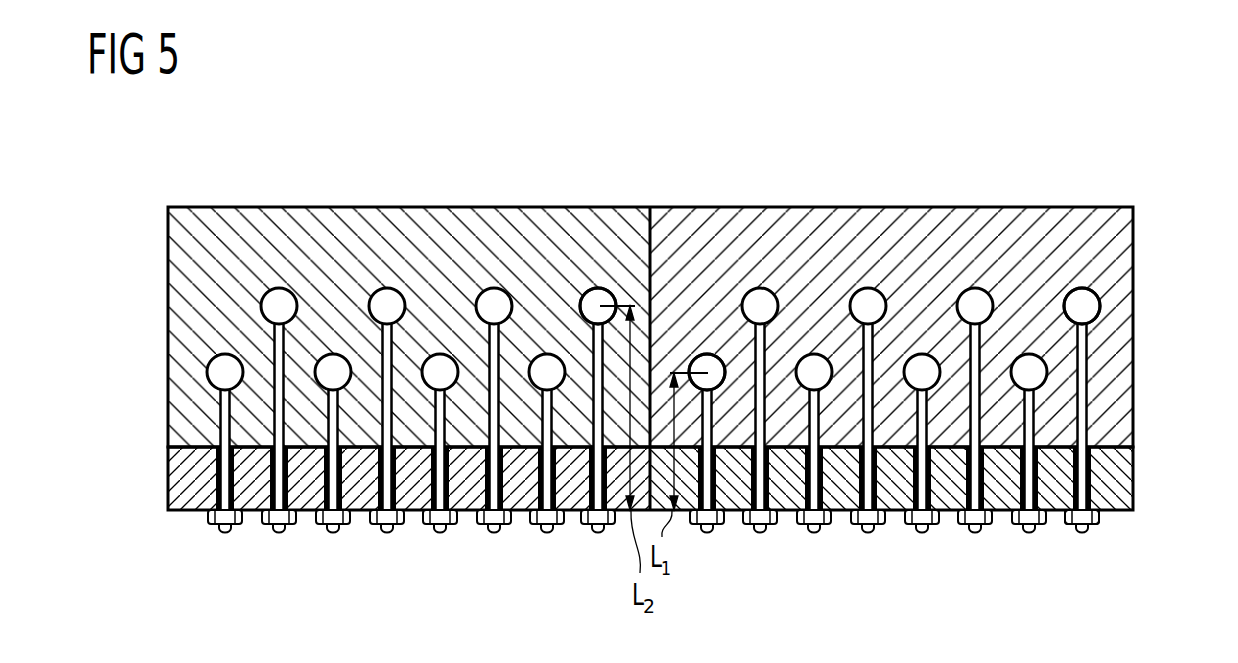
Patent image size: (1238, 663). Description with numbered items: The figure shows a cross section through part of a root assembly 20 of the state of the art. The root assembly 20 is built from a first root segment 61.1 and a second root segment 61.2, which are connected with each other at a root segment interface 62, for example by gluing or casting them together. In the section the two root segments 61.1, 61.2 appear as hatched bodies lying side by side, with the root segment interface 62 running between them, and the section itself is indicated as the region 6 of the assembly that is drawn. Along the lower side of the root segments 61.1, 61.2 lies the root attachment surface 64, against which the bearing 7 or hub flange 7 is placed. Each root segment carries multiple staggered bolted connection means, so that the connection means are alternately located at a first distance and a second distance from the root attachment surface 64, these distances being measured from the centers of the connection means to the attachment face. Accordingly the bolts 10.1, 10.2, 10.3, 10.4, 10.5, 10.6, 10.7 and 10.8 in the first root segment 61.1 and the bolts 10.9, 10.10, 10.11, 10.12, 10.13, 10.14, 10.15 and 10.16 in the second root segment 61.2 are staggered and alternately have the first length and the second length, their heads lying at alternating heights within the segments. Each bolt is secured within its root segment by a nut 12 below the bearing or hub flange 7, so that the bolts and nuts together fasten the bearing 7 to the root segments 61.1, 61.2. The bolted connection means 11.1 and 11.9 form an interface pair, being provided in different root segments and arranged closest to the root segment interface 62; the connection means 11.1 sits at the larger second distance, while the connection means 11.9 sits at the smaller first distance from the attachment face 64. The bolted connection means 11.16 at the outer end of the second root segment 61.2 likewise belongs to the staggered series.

The root assembly 20 is at (1152, 161).
The first housing part 6 is at (1134, 350).
The first root segment 61.1 is at (180, 273).
The second root segment 61.2 is at (1120, 248).
The root segment interface 62 is at (649, 226).
The root attachment surface 64 is at (185, 455).
The bearing or hub flange 7 is at (1112, 478).
The nut 12 is at (1092, 518).
The bolt 10.1 is at (596, 487).
The bolt 10.2 is at (545, 423).
The bolt 10.3 is at (492, 485).
The bolt 10.4 is at (438, 423).
The bolt 10.5 is at (385, 485).
The bolt 10.6 is at (331, 423).
The bolt 10.7 is at (277, 485).
The bolt 10.8 is at (223, 423).
The bolt 10.9 is at (709, 485).
The bolt 10.10 is at (760, 360).
The bolt 10.11 is at (816, 485).
The bolt 10.12 is at (868, 360).
The bolt 10.13 is at (924, 485).
The bolt 10.14 is at (975, 360).
The bolt 10.15 is at (1032, 485).
The bolt 10.16 is at (1082, 360).
The bolted connection means 11.1 is at (598, 305).
The bolted connection means 11.9 is at (707, 368).
The bolted connection means 11.16 is at (1086, 307).